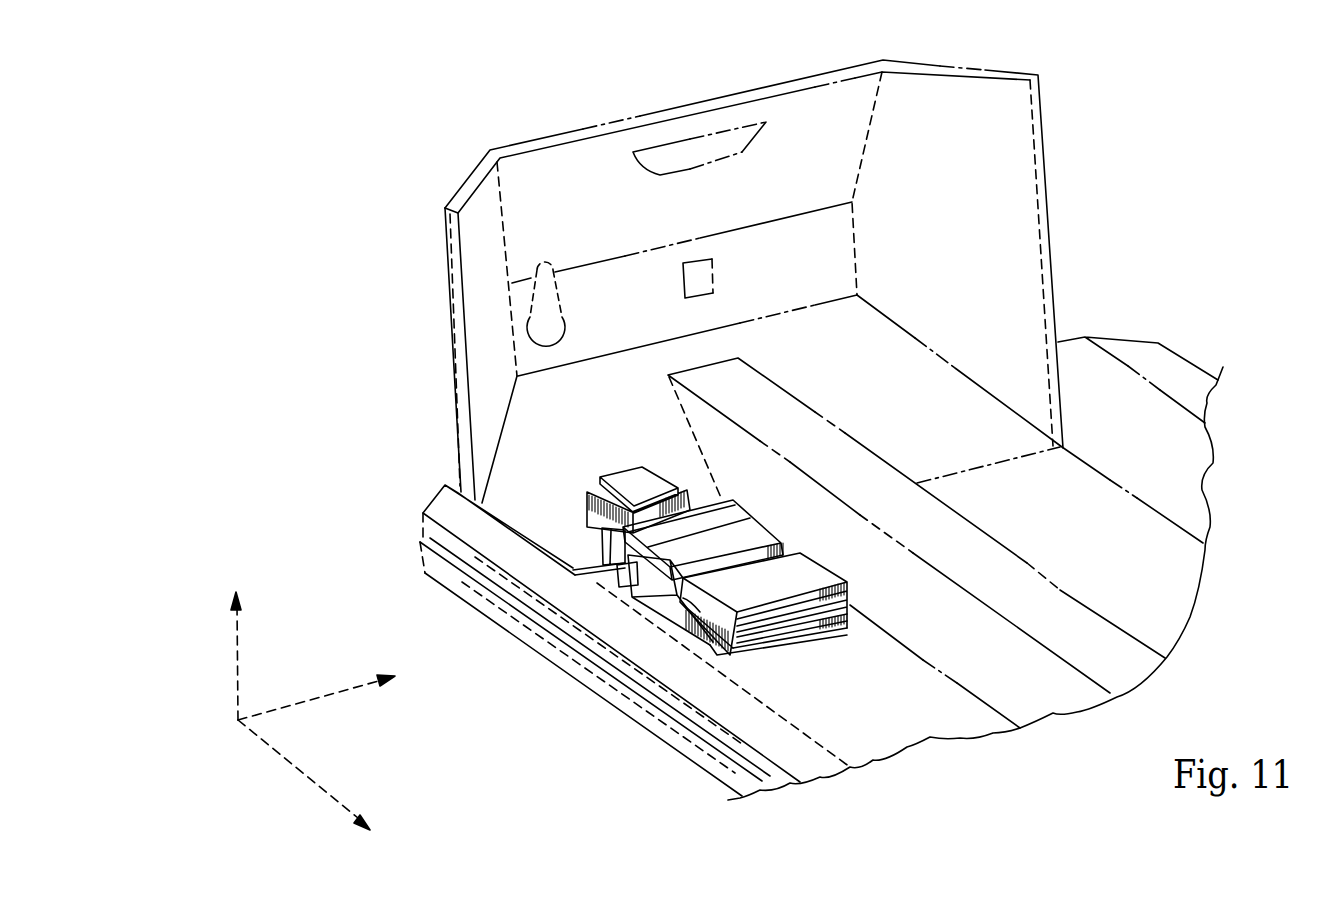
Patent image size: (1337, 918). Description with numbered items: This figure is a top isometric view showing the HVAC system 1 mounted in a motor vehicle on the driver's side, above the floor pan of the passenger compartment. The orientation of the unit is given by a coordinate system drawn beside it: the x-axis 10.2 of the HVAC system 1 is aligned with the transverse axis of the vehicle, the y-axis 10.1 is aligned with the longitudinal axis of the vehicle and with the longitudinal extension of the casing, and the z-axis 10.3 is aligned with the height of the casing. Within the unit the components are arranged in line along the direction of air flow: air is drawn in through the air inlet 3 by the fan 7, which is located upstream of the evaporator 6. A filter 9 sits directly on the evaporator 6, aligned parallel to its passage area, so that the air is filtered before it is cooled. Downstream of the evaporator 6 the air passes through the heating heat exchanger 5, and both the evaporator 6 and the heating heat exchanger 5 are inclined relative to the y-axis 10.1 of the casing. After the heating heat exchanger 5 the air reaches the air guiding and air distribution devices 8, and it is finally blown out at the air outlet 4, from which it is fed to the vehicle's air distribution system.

The HVAC system 1 is at (1116, 293).
The air inlet 3 is at (595, 475).
The air outlet 4 is at (803, 627).
The heating heat exchanger 5 is at (697, 635).
The evaporator 6 is at (632, 587).
The fan 7 is at (607, 570).
The air guiding and air distribution devices 8 is at (760, 633).
The filter 9 is at (622, 572).
The y-axis 10.1 is at (303, 772).
The x-axis 10.2 is at (310, 700).
The z-axis 10.3 is at (237, 647).